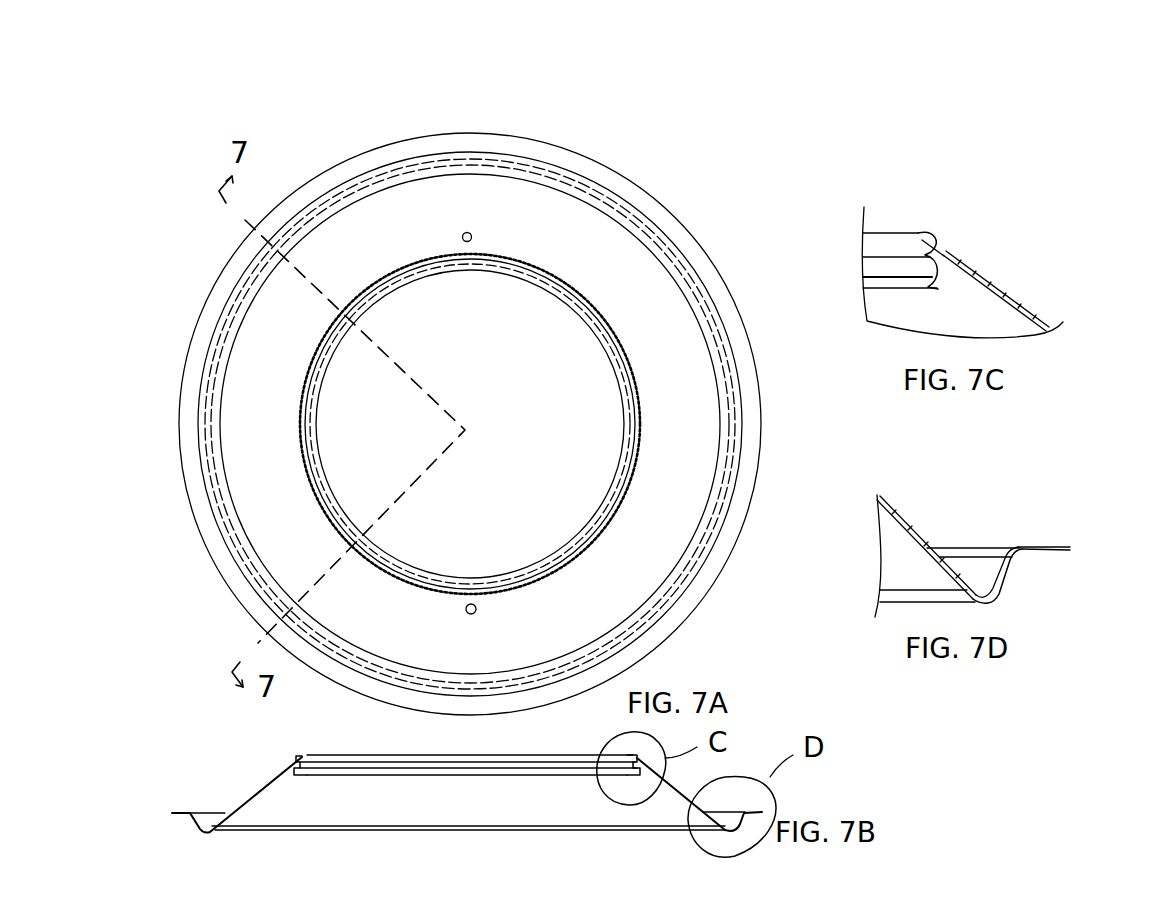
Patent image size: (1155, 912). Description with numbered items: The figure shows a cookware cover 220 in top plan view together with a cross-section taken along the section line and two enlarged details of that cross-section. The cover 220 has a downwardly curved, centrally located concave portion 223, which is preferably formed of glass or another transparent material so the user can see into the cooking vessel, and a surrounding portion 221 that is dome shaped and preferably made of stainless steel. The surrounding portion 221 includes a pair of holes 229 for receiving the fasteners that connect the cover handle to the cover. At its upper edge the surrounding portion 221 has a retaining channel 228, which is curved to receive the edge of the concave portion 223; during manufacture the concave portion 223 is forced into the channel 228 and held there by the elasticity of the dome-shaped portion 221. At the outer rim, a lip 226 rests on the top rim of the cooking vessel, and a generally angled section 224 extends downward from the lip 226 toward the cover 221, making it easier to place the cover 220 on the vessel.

In FIG. 7A, the cover 220 is at (377, 138).
In FIG. 7A, the surrounding portion 221 is at (655, 303).
In FIG. 7B, the surrounding portion 221 is at (247, 790).
In FIG. 7C, the surrounding portion 221 is at (1015, 293).
In FIG. 7D, the surrounding portion 221 is at (908, 525).
In FIG. 7A, the concave portion 223 is at (519, 320).
In FIG. 7D, the angled section 224 is at (1010, 575).
In FIG. 7D, the lip 226 is at (1043, 548).
In FIG. 7C, the retaining channel 228 is at (947, 258).
In FIG. 7A, the holes 229 is at (468, 236).